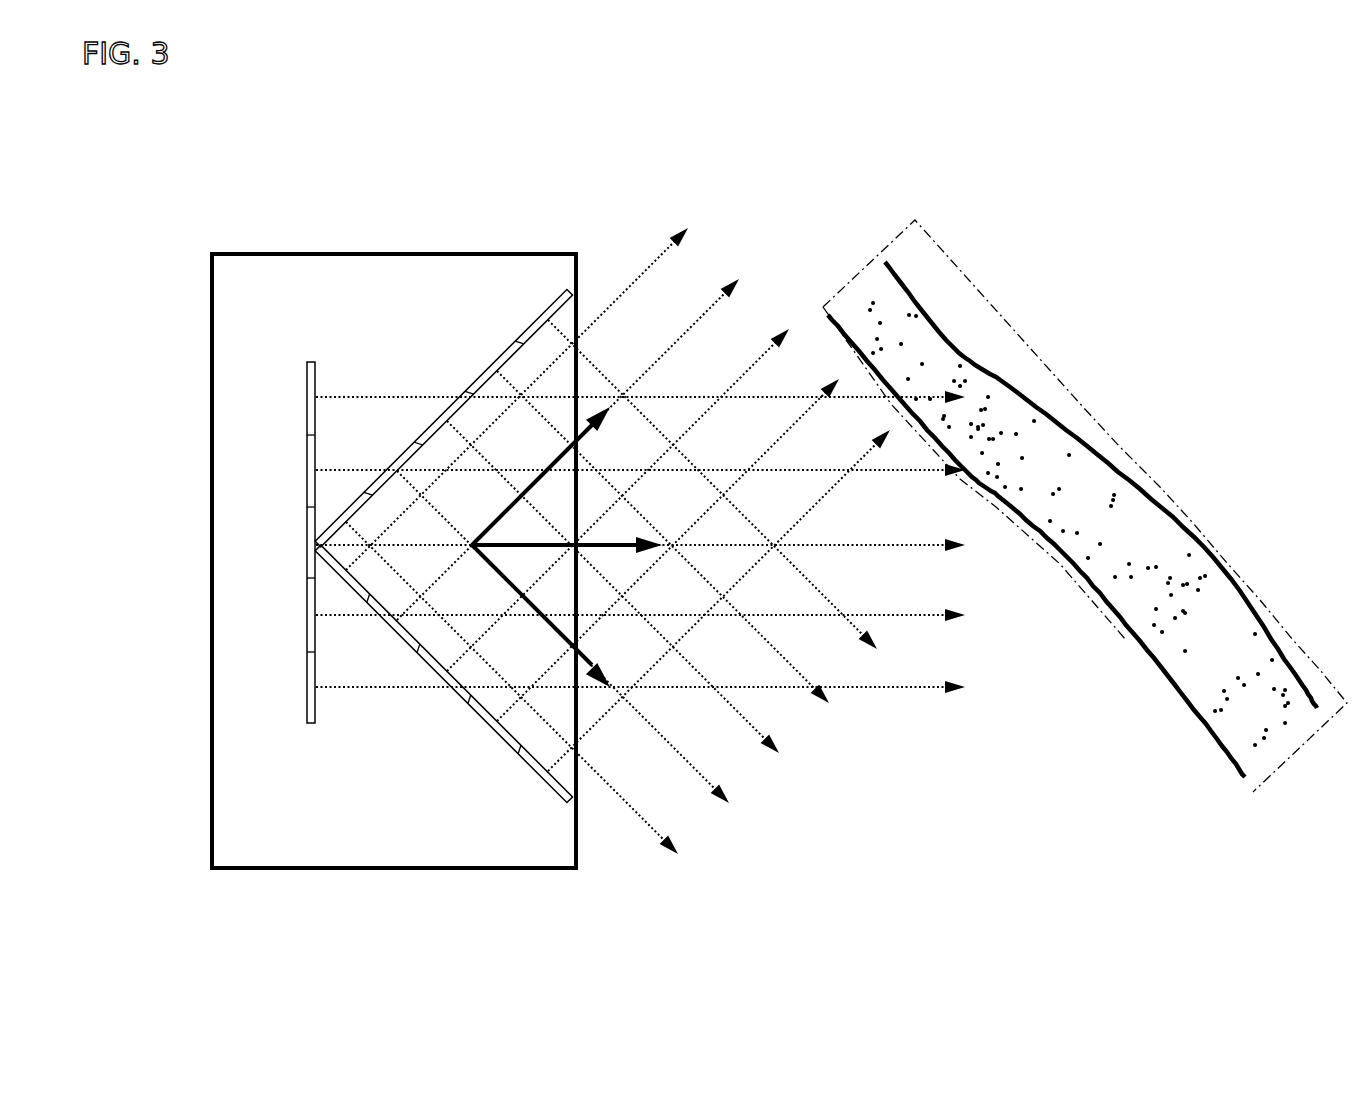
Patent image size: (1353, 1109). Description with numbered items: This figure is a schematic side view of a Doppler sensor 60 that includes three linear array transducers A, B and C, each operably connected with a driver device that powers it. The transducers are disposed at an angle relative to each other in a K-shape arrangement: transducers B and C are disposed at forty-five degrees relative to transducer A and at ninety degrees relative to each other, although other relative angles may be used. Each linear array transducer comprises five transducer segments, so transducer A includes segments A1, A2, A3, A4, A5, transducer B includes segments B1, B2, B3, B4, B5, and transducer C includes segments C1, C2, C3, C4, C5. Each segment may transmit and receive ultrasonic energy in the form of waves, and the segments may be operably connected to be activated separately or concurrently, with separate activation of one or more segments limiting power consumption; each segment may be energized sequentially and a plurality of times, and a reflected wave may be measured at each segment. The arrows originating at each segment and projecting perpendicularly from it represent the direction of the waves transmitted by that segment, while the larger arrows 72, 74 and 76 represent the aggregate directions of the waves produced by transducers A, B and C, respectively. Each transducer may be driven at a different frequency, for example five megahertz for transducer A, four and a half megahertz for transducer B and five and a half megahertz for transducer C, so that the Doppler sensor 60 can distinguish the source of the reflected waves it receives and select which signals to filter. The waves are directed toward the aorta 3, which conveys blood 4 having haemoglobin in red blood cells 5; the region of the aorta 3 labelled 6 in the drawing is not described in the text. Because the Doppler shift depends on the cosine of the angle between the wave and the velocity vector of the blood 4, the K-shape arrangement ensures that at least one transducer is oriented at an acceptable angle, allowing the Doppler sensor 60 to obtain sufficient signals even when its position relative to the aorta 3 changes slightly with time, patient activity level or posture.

The Doppler sensor 60 is at (568, 242).
The linear array transducer A is at (254, 348).
The transducer segment A1 is at (307, 385).
The transducer segment A2 is at (307, 463).
The transducer segment A3 is at (307, 548).
The transducer segment A4 is at (307, 619).
The transducer segment A5 is at (307, 698).
The linear array transducer B is at (423, 290).
The transducer segment B1 is at (540, 304).
The transducer segment B2 is at (503, 344).
The transducer segment B3 is at (447, 402).
The transducer segment B4 is at (397, 442).
The transducer segment B5 is at (350, 498).
The linear array transducer C is at (407, 817).
The transducer segment C1 is at (352, 593).
The transducer segment C2 is at (402, 647).
The transducer segment C3 is at (447, 692).
The transducer segment C4 is at (493, 740).
The transducer segment C5 is at (543, 795).
The arrow 72 is at (627, 550).
The arrow 74 is at (530, 612).
The arrow 76 is at (530, 482).
The aorta 3 is at (910, 293).
The blood 4 is at (905, 308).
The red blood cells 5 is at (900, 336).
The measurement region 6 is at (1110, 523).